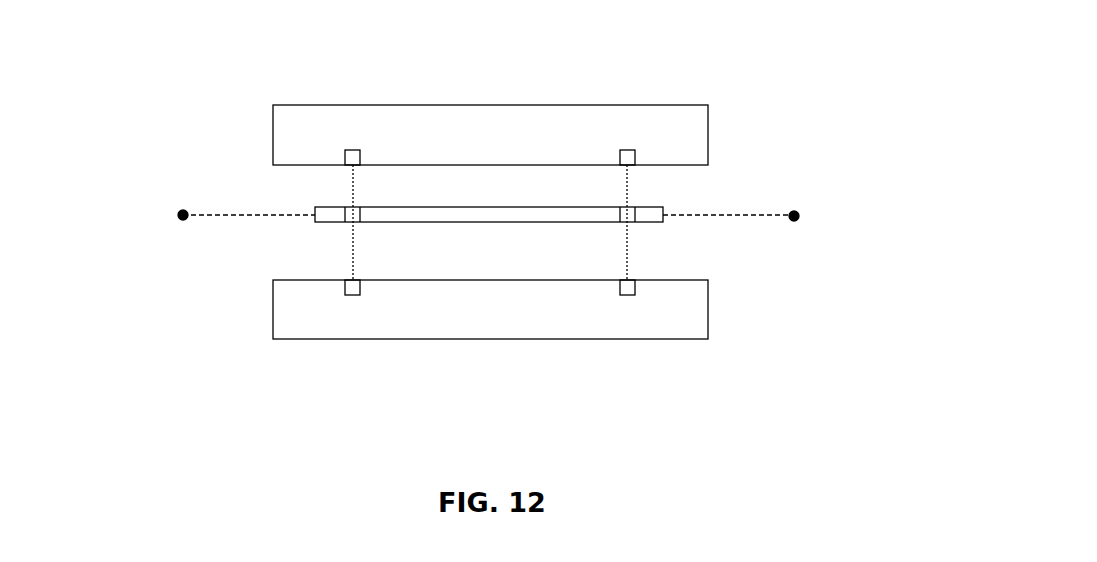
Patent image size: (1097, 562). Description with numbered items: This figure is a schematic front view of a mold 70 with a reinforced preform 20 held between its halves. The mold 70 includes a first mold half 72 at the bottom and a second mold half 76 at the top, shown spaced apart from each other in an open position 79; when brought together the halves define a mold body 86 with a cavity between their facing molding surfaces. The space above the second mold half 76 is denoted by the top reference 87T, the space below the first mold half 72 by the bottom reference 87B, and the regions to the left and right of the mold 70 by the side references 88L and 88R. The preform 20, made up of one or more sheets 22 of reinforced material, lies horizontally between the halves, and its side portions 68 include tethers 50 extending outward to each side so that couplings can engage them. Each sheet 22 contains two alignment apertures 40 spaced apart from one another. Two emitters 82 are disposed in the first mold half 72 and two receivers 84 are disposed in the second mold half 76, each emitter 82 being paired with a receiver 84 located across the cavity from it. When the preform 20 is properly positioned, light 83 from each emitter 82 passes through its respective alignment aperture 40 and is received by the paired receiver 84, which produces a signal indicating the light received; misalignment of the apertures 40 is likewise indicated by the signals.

The mold 70 is at (108, 48).
The open position 79 is at (165, 72).
The mold body 86 is at (795, 62).
The second mold half 76 is at (495, 144).
The first mold half 72 is at (495, 319).
The top direction/location 87T is at (468, 105).
The bottom direction/location 87B is at (467, 339).
The receiver 84 is at (352, 150).
The emitter 82 is at (356, 297).
The light 83 is at (353, 193).
The alignment aperture 40 is at (345, 223).
The reinforced preform 20 is at (489, 237).
The sheet of reinforced material 22 is at (525, 222).
The tether 50 is at (248, 215).
The side portion 68 is at (183, 215).
The left side/direction 88L is at (110, 287).
The right side/direction 88R is at (895, 287).